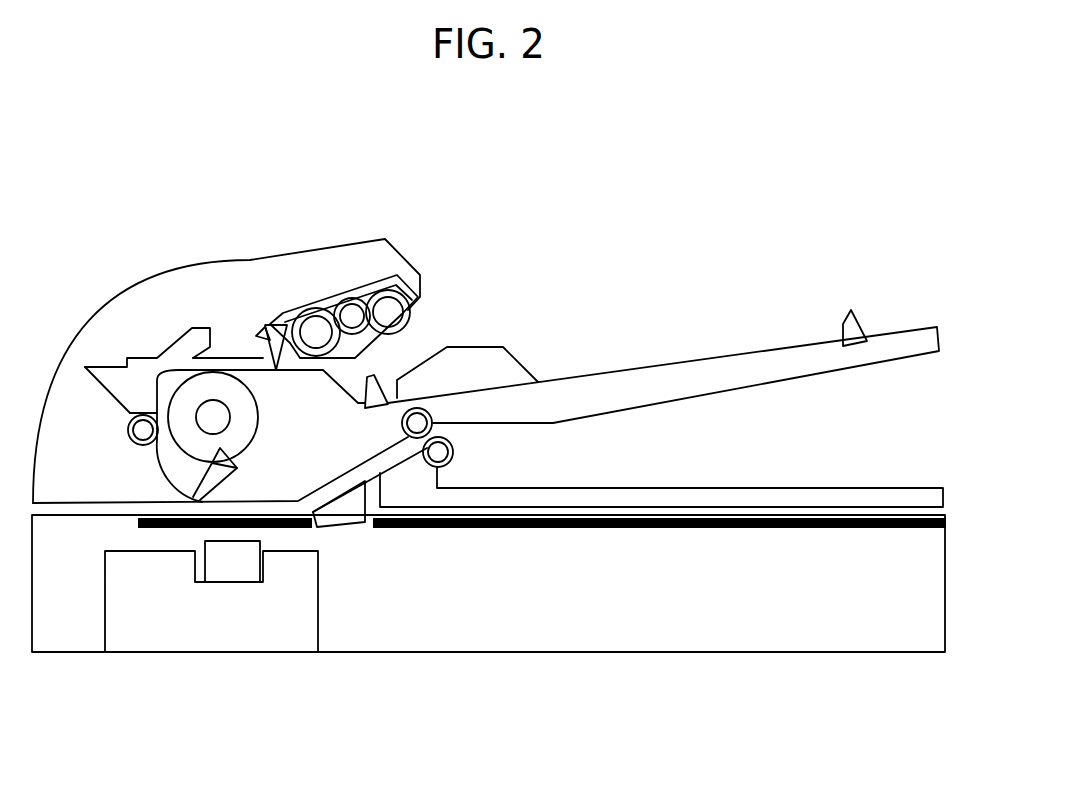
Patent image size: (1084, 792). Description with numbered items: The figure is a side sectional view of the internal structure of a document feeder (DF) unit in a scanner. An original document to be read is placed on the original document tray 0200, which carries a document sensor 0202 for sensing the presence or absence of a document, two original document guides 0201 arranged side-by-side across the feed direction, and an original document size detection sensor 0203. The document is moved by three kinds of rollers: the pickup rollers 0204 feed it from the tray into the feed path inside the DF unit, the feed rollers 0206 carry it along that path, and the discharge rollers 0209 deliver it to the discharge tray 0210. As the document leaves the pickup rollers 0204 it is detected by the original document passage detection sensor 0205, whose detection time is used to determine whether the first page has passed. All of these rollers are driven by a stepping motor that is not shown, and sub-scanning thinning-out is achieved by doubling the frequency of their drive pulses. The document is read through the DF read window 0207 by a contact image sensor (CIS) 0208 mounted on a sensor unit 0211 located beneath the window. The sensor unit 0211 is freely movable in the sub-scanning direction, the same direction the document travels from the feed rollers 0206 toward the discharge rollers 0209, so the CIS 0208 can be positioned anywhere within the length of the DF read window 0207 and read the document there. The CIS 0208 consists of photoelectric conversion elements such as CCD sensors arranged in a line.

The original document tray 0200 is at (652, 388).
The original document guides 0201 is at (488, 358).
The document sensor 0202 is at (375, 392).
The original document size detection sensor 0203 is at (852, 328).
The pickup rollers 0204 is at (382, 295).
The original document passage detection sensor 0205 is at (267, 327).
The feed rollers 0206 is at (203, 392).
The DF read window 0207 is at (147, 527).
The contact image sensor (CIS) 0208 is at (224, 567).
The discharge rollers 0209 is at (425, 427).
The discharge tray 0210 is at (658, 493).
The sensor unit 0211 is at (277, 603).